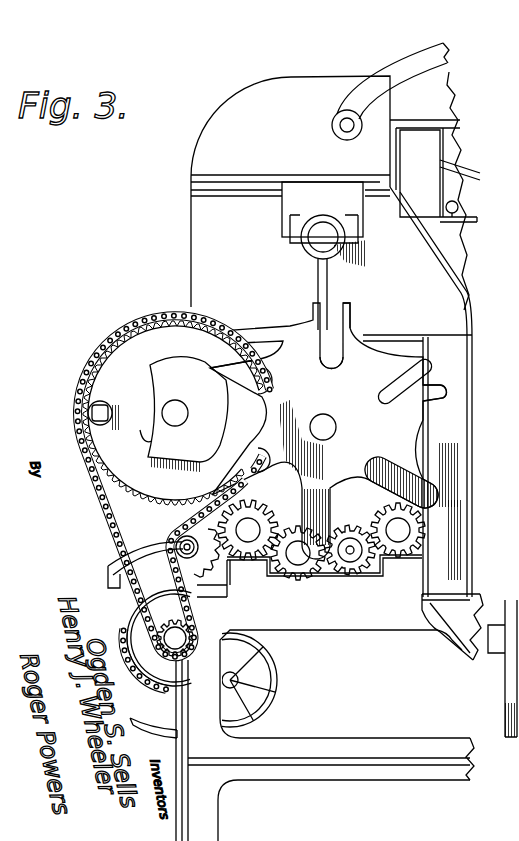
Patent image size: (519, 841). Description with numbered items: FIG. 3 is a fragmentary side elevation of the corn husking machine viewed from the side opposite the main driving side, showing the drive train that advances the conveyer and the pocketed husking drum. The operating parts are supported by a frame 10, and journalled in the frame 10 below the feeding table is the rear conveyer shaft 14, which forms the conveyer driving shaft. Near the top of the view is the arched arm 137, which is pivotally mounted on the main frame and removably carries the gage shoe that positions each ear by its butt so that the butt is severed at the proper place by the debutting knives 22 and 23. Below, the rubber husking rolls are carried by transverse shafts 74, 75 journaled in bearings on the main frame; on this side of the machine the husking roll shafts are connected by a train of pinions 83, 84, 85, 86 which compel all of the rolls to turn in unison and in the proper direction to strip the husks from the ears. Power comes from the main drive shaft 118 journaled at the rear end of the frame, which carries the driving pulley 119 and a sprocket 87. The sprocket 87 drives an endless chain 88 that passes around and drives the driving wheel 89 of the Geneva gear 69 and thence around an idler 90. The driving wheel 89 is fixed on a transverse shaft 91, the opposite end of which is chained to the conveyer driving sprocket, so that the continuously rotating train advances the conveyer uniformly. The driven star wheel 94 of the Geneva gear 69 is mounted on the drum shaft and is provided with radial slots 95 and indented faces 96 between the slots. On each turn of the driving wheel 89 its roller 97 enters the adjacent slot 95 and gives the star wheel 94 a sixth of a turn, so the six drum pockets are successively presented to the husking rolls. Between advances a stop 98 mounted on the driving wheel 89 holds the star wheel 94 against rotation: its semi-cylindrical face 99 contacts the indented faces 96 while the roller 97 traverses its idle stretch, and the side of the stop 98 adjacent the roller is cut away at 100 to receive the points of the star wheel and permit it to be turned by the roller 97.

The frame 10 is at (440, 640).
The rear conveyer shaft 14 is at (323, 232).
The debutting knife 22 is at (460, 140).
The debutting knife 23 is at (477, 190).
The Geneva gear 69 is at (355, 298).
The husking roll shaft 74 is at (394, 524).
The husking roll shaft 75 is at (347, 575).
The pinion 83 is at (400, 557).
The pinion 84 is at (354, 556).
The pinion 85 is at (303, 575).
The pinion 86 is at (250, 558).
The sprocket 87 is at (197, 617).
The endless chain 88 is at (103, 513).
The driving wheel of the Geneva gear 89 is at (173, 413).
The idler 90 is at (212, 572).
The transverse shaft 91 is at (182, 409).
The star wheel 94 is at (328, 431).
The radial slots 95 is at (331, 354).
The indented faces 96 is at (434, 400).
The roller 97 is at (104, 400).
The stop 98 is at (188, 414).
The semi-cylindrical face 99 is at (200, 364).
The cut-away portion 100 is at (139, 431).
The wheel 118 is at (160, 678).
The wheel 119 is at (268, 683).
The arm 137 is at (450, 57).